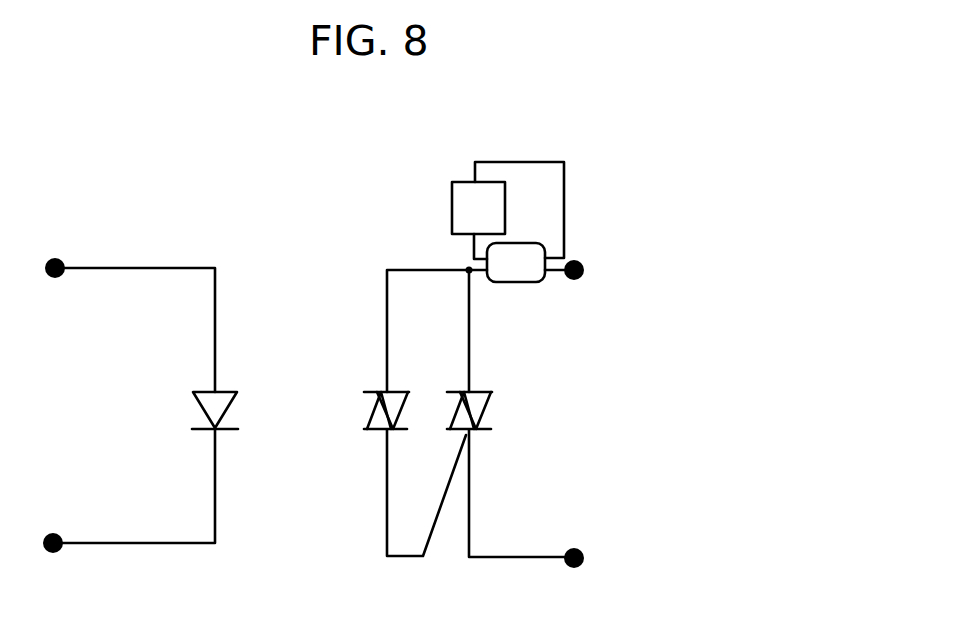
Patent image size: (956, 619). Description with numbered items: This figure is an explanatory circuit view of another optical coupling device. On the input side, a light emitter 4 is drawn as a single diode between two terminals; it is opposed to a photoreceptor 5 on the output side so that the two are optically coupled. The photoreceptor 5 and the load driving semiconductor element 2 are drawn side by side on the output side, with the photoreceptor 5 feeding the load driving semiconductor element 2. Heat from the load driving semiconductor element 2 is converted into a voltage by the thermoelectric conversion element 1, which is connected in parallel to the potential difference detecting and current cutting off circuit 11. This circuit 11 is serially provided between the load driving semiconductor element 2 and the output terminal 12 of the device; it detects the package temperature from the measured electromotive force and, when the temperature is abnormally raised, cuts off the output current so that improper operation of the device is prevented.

The thermoelectric conversion element 1 is at (452, 198).
The load driving semiconductor element 2 is at (475, 390).
The light emitter 4 is at (193, 392).
The photoreceptor 5 is at (397, 390).
The potential difference detecting and current cutting off circuit 11 is at (532, 283).
The output terminal 12 is at (586, 270).